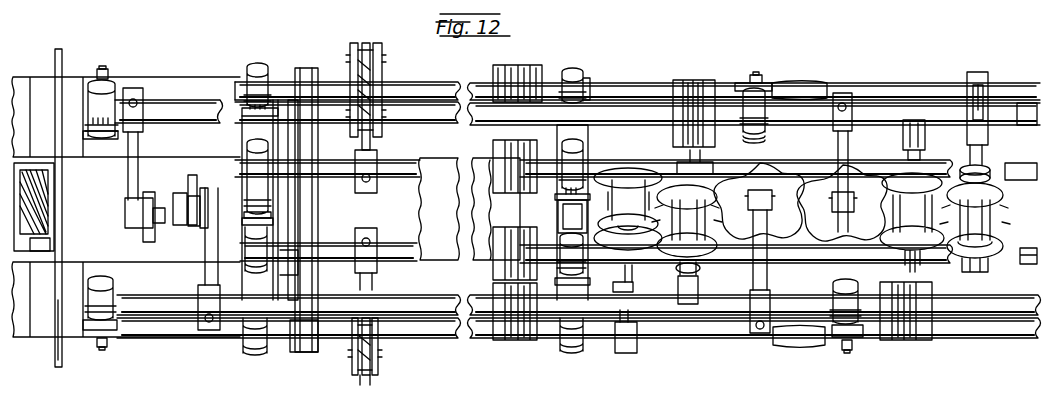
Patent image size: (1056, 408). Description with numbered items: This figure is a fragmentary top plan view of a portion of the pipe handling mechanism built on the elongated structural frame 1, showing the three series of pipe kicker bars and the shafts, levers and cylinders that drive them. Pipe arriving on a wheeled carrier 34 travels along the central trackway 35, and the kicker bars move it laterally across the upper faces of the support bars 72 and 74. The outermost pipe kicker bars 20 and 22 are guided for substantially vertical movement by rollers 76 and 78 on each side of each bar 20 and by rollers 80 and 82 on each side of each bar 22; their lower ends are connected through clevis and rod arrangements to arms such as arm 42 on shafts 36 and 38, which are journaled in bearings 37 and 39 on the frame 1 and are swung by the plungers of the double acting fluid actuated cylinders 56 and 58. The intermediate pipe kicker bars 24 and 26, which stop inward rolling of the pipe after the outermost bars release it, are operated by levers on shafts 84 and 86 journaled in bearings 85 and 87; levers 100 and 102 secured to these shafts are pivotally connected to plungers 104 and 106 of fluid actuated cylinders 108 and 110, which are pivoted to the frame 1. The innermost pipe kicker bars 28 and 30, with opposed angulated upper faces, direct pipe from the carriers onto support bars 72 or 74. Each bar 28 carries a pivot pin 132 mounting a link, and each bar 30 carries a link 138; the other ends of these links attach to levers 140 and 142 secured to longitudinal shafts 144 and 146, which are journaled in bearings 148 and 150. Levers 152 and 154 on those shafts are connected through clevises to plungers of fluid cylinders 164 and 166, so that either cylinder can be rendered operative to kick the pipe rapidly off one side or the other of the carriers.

The elongated structural frame 1 is at (652, 76).
The outermost pipe kicker bar 20 is at (368, 86).
The outermost pipe kicker bar 22 is at (362, 333).
The intermediate pipe kicker bar 24 is at (305, 138).
The intermediate pipe kicker bar 26 is at (303, 275).
The innermost pipe kicker bar 28 is at (190, 175).
The innermost pipe kicker bar 30 is at (147, 241).
The wheeled carrier 34 is at (50, 193).
The central trackway 35 is at (420, 262).
The shaft 36 is at (428, 160).
The bearing 37 is at (245, 135).
The shaft 38 is at (407, 241).
The bearing 39 is at (256, 272).
The outwardly extending arm 42 is at (365, 280).
The fluid actuated cylinder 56 is at (998, 210).
The fluid actuated cylinder 58 is at (704, 172).
The support bar 72 is at (62, 57).
The support bar 74 is at (62, 350).
The roller 76 is at (362, 57).
The roller 78 is at (375, 120).
The roller 80 is at (366, 380).
The roller 82 is at (353, 325).
The shaft 84 is at (408, 82).
The bearing 85 is at (256, 68).
The shaft 86 is at (960, 338).
The bearing 87 is at (266, 352).
The lever 100 is at (975, 108).
The lever 102 is at (636, 348).
The plunger 104 is at (985, 165).
The plunger 106 is at (632, 278).
The fluid actuated cylinder 108 is at (995, 241).
The fluid actuated cylinder 110 is at (607, 203).
The pivot pin 132 is at (105, 205).
The link 138 is at (200, 225).
The lever 140 is at (206, 272).
The lever 142 is at (133, 146).
The longitudinal shaft 144 is at (178, 320).
The longitudinal shaft 146 is at (185, 100).
The bearing 148 is at (122, 322).
The bearing 150 is at (108, 103).
The lever 152 is at (760, 280).
The lever 154 is at (837, 150).
The fluid cylinder 164 is at (767, 190).
The fluid cylinder 166 is at (810, 250).